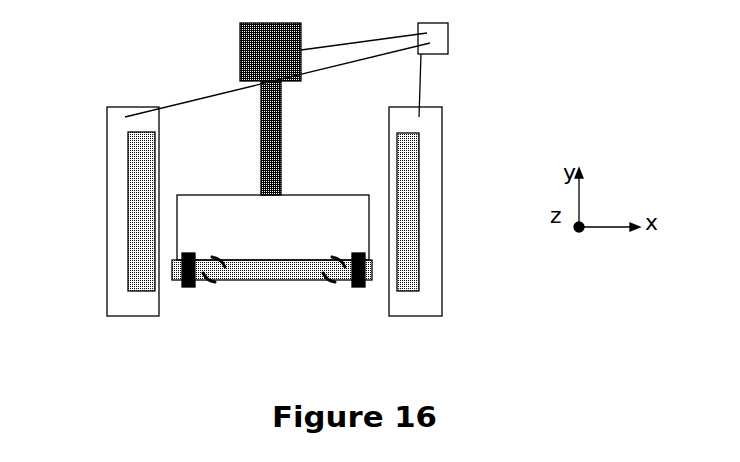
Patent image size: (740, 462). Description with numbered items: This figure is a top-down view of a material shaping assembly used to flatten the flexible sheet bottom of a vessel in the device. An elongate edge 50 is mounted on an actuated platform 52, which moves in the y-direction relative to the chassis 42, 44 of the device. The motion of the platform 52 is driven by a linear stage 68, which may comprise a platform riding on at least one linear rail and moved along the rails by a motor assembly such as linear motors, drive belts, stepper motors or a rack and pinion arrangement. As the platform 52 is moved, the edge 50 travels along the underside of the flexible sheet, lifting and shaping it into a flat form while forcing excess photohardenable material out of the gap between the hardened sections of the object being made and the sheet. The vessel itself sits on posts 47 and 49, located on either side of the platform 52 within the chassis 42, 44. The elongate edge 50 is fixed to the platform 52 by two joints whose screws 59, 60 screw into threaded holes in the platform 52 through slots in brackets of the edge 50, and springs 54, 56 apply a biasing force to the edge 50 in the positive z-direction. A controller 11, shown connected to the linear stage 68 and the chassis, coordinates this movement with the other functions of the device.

The controller 11 is at (330, 63).
The chassis 42 is at (93, 211).
The chassis 44 is at (454, 211).
The post 47 is at (101, 211).
The post 49 is at (452, 212).
The elongate edge 50 is at (272, 308).
The actuated platform 52 is at (273, 193).
The spring 54 is at (216, 312).
The spring 56 is at (321, 312).
The screw 59 is at (163, 314).
The screw 60 is at (378, 313).
The linear stage 68 is at (228, 109).